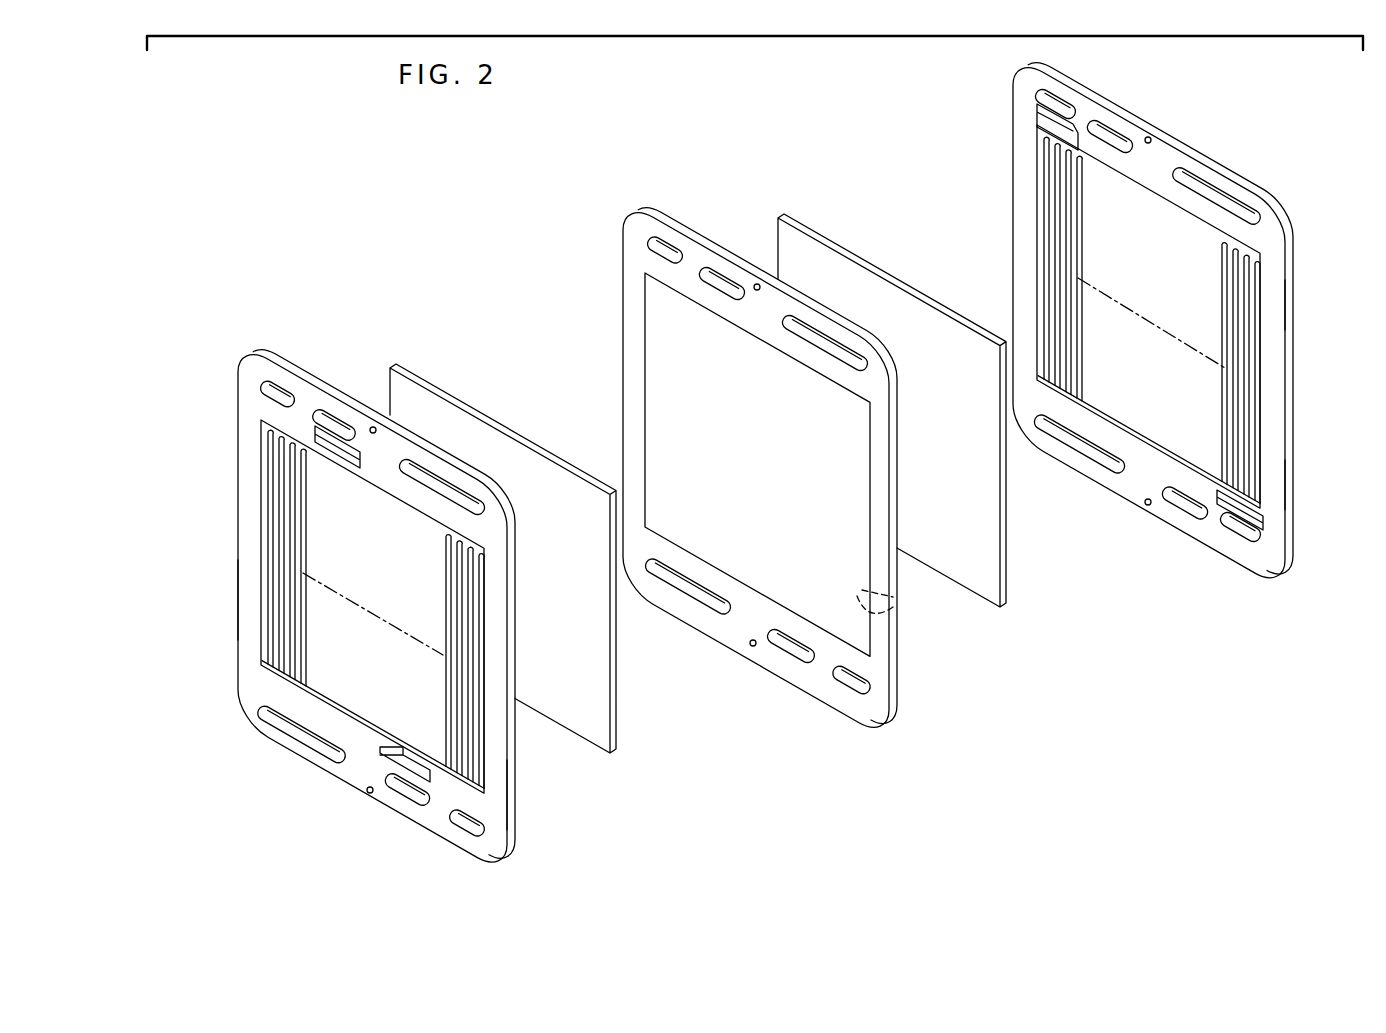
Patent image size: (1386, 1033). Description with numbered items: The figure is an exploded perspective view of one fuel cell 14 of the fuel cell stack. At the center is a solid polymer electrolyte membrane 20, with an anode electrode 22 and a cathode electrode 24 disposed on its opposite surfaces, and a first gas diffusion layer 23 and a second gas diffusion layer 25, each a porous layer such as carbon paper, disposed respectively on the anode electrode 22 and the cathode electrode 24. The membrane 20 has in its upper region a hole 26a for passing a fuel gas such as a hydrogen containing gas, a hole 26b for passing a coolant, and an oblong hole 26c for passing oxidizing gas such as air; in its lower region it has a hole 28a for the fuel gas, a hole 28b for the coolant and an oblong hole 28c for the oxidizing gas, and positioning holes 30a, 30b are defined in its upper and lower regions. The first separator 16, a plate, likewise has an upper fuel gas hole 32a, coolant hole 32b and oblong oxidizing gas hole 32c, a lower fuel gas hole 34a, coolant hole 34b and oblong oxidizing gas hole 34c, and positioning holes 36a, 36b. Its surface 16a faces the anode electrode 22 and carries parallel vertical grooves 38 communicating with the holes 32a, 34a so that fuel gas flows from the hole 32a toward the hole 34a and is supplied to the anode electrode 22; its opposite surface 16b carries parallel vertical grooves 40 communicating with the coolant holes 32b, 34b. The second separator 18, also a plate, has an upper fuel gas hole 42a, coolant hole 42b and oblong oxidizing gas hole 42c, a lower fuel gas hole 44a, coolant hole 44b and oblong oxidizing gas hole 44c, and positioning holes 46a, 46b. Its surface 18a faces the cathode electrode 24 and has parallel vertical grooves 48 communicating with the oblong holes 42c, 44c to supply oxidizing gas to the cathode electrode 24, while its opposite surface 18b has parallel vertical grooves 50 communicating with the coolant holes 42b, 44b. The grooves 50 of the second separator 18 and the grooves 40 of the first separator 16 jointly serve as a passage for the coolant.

The fuel cell 14 is at (684, 198).
The first separator 16 is at (1209, 146).
The surface of first separator 16a is at (1280, 480).
The opposite surface of first separator 16b is at (1278, 296).
The second separator 18 is at (235, 453).
The surface of second separator 18a is at (488, 793).
The opposite surface of second separator 18b is at (256, 616).
The solid polymer electrolyte membrane 20 is at (709, 236).
The anode electrode 22 is at (896, 601).
The first gas diffusion layer 23 is at (1005, 571).
The cathode electrode 24 is at (876, 656).
The second gas diffusion layer 25 is at (606, 720).
The hole 26a is at (660, 246).
The hole 26b is at (723, 288).
The oblong hole 26c is at (822, 348).
The hole 28a is at (852, 683).
The hole 28b is at (793, 651).
The oblong hole 28c is at (702, 593).
The positioning hole 30a is at (823, 287).
The positioning hole 30b is at (754, 647).
The hole 32a is at (1062, 101).
The hole 32b is at (1113, 138).
The oblong hole 32c is at (1321, 153).
The hole 34a is at (1242, 541).
The hole 34b is at (1187, 513).
The oblong hole 34c is at (1080, 446).
The positioning hole 36a is at (1148, 145).
The positioning hole 36b is at (1147, 506).
The grooves 38 is at (1055, 226).
The grooves 40 is at (1245, 358).
The hole 42a is at (283, 392).
The hole 42b is at (338, 424).
The oblong hole 42c is at (437, 478).
The hole 44a is at (462, 823).
The hole 44b is at (410, 788).
The oblong hole 44c is at (292, 736).
The positioning hole 46a is at (376, 428).
The positioning hole 46b is at (367, 793).
The grooves 48 is at (487, 644).
The grooves 50 is at (300, 545).